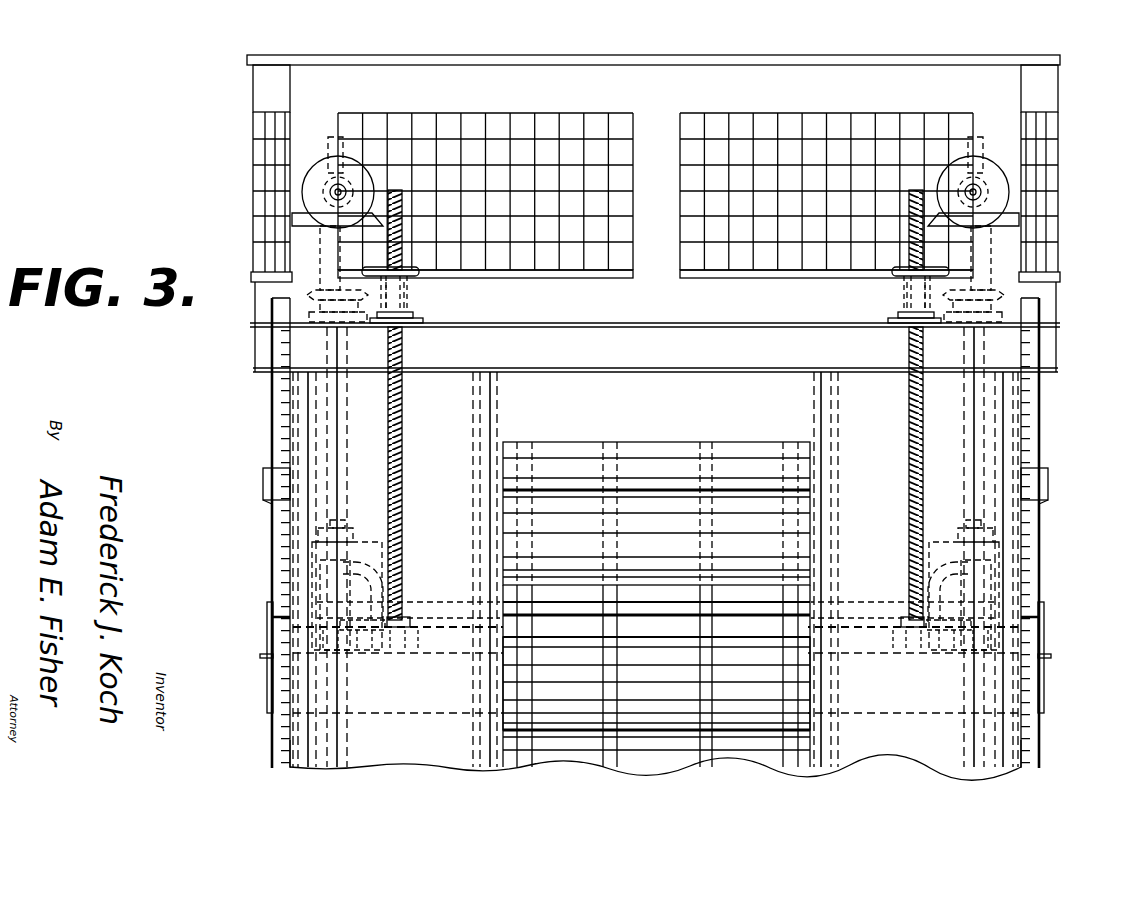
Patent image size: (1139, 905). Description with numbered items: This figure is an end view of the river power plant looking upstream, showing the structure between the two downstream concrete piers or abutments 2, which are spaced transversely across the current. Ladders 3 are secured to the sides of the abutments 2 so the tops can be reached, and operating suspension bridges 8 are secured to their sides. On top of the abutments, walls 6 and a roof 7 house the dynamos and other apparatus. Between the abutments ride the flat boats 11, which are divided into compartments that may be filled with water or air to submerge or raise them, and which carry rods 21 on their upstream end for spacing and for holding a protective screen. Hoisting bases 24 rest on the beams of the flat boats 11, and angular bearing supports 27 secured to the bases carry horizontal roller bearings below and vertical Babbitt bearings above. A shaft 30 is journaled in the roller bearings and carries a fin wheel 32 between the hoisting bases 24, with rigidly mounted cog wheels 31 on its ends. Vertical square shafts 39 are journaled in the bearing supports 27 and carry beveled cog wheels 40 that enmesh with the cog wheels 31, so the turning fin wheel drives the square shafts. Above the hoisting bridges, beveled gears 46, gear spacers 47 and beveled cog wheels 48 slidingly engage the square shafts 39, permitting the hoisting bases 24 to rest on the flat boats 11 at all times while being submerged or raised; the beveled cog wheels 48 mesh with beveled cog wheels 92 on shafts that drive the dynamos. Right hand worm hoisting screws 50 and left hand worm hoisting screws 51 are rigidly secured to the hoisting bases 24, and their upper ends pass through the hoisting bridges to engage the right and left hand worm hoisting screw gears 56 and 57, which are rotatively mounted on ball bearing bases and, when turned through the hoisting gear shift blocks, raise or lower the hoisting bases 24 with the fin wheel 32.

The downstream piers 2 is at (335, 728).
The ladders 3 is at (290, 543).
The walls 6 is at (1008, 95).
The roof 7 is at (876, 61).
The operating suspension bridges 8 is at (268, 497).
The flat boats 11 is at (377, 703).
The rods 21 is at (270, 626).
The hoisting bases 24 is at (442, 643).
The angular bearing supports 27 is at (402, 592).
The shaft 30 is at (625, 605).
The cog wheels 31 is at (367, 630).
The fin wheel 32 is at (620, 458).
The square shafts 39 is at (333, 447).
The beveled cog wheels 40 is at (343, 587).
The beveled gears 46 is at (307, 296).
The gear spacers 47 is at (324, 236).
The beveled cog wheels 48 is at (296, 222).
The right hand worm hoisting screws 50 is at (910, 428).
The left hand worm hoisting screws 51 is at (402, 463).
The right hand worm hoisting screw gear 56 is at (893, 272).
The left hand worm hoisting screw gear 57 is at (418, 272).
The beveled cog wheels 92 is at (350, 173).